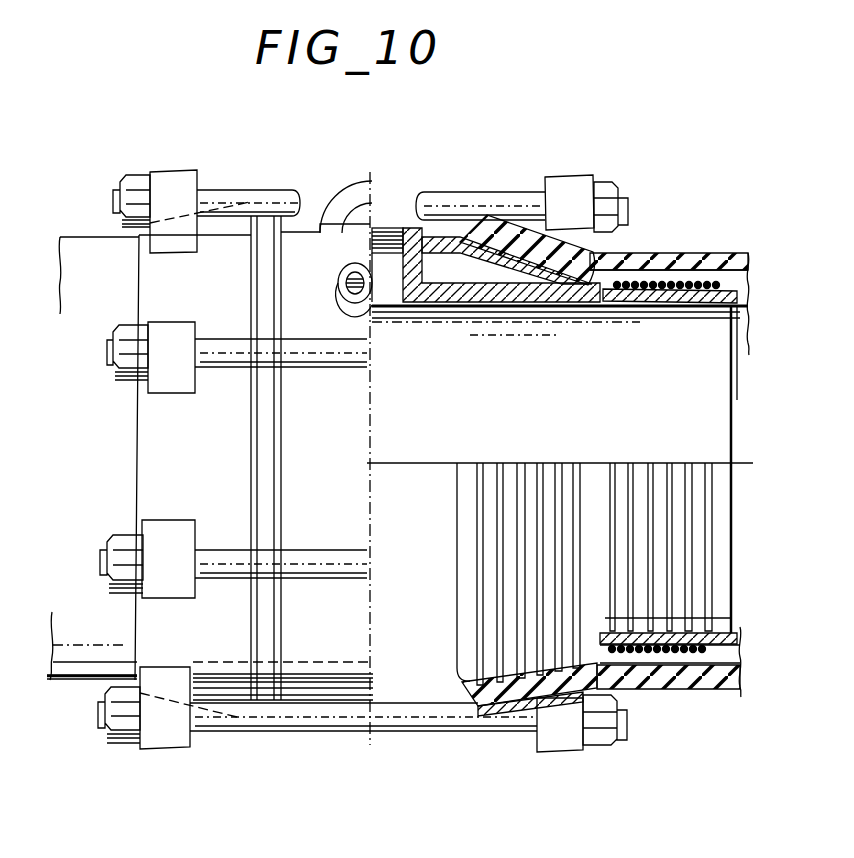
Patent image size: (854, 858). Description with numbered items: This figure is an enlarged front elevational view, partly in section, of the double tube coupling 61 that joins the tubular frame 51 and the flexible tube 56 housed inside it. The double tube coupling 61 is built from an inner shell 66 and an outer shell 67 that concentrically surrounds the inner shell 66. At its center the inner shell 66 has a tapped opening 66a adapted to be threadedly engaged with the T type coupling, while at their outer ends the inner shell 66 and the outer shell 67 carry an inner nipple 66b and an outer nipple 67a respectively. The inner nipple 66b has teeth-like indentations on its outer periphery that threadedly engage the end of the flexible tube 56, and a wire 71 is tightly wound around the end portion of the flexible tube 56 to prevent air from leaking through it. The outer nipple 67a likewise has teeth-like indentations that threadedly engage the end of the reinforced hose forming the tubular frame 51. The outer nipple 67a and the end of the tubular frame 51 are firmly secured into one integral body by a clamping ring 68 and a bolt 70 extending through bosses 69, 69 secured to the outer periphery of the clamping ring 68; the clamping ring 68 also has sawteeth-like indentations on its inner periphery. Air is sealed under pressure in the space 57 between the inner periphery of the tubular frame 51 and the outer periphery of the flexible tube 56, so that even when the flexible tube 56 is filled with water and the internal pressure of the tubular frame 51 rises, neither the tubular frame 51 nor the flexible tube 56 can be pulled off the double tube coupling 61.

The tubular frame 51 is at (80, 254).
The flexible tube 56 is at (740, 360).
The space 57 is at (727, 277).
The double tube coupling 61 is at (372, 178).
The inner shell 66 is at (505, 293).
The tapped opening 66a is at (390, 283).
The inner nipple 66b is at (676, 298).
The outer shell 67 is at (439, 283).
The outer nipple 67a is at (508, 232).
The clamping ring 68 is at (603, 205).
The bosses 69 is at (175, 190).
The bolt 70 is at (277, 196).
The wire 71 is at (627, 293).